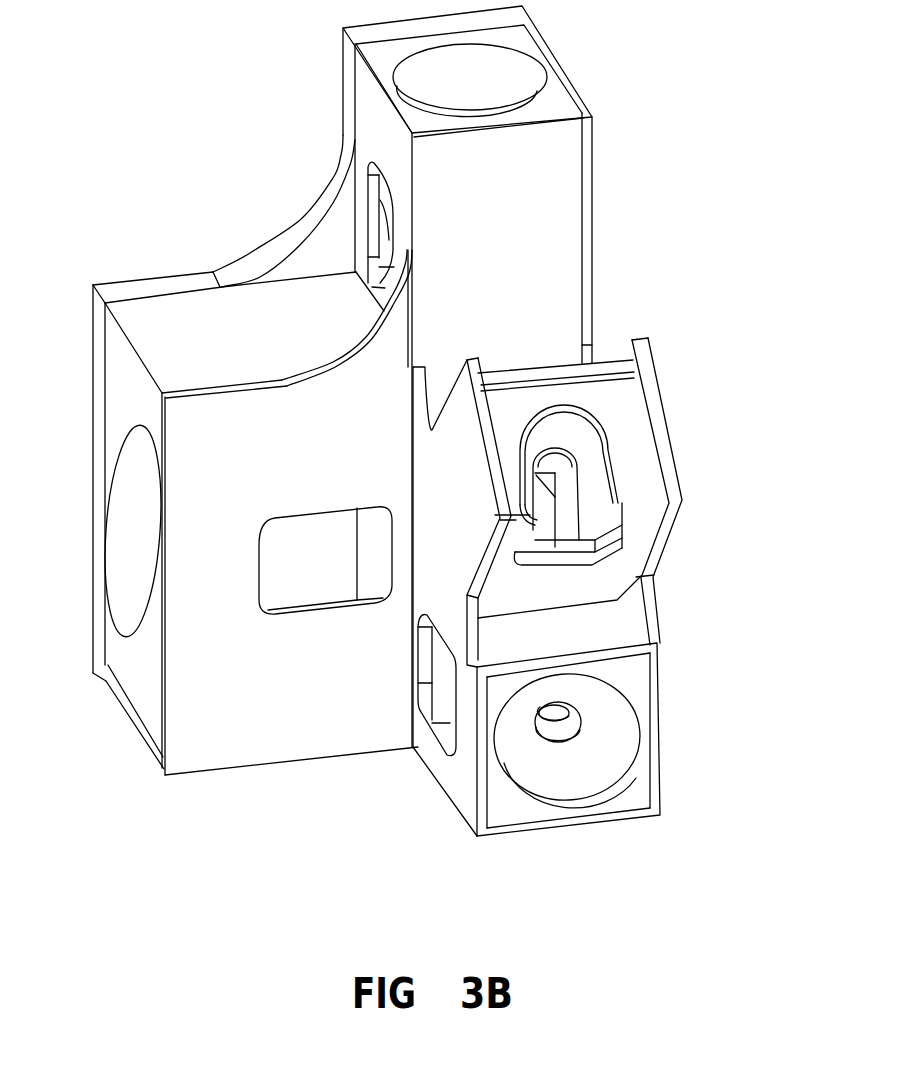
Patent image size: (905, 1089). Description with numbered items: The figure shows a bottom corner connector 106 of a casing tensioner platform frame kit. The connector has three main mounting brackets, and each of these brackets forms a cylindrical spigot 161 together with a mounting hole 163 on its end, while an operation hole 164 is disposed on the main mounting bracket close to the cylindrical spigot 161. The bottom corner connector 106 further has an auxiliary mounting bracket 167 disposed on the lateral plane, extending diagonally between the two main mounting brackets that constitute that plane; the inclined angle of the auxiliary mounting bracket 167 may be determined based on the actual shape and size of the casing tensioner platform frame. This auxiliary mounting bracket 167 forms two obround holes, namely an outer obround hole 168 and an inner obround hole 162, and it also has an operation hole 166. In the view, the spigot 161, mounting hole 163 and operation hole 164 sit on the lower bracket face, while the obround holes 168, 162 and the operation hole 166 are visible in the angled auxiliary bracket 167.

The bottom corner connector 106 is at (298, 245).
The cylindrical spigot 161 is at (623, 755).
The inner obround hole 162 is at (589, 500).
The mounting hole 163 is at (571, 725).
The operation hole 164 is at (433, 730).
The operation hole 166 is at (588, 564).
The auxiliary mounting bracket 167 is at (650, 402).
The outer obround hole 168 is at (612, 453).